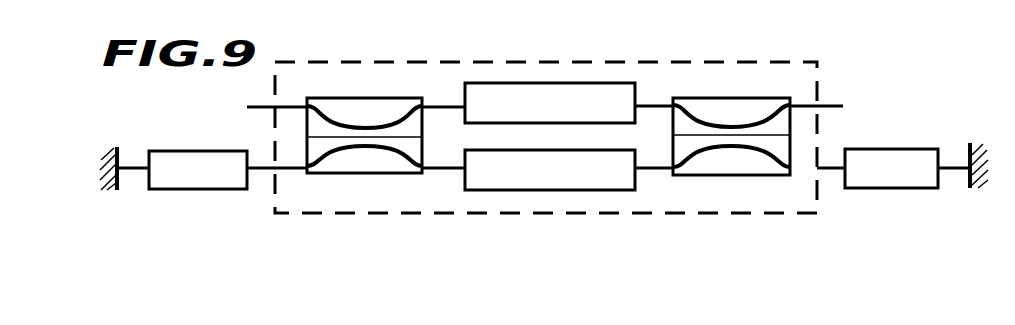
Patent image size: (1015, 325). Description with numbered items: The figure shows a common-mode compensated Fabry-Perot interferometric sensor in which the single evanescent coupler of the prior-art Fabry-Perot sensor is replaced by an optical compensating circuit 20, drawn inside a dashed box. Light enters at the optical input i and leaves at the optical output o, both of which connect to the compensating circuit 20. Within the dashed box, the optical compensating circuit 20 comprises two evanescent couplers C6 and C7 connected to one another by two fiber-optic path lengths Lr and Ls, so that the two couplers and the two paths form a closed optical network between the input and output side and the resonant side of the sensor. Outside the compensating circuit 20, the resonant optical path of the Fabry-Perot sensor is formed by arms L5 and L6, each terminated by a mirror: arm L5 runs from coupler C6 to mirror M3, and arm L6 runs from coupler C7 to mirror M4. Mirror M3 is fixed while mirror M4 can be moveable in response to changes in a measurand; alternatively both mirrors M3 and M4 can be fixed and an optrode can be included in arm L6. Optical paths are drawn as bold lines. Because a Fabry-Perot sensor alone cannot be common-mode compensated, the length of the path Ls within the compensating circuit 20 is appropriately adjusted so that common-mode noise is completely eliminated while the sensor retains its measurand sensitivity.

The optical compensating circuit 20 is at (744, 57).
The evanescent coupler C6 is at (365, 174).
The evanescent coupler C7 is at (738, 176).
The arm L5 is at (228, 170).
The arm L6 is at (877, 168).
The fiber-optic path length Lr is at (547, 103).
The fiber-optic path length Ls is at (547, 170).
The mirror M3 is at (120, 190).
The mirror M4 is at (967, 189).
The optical input i is at (272, 104).
The optical output o is at (829, 106).